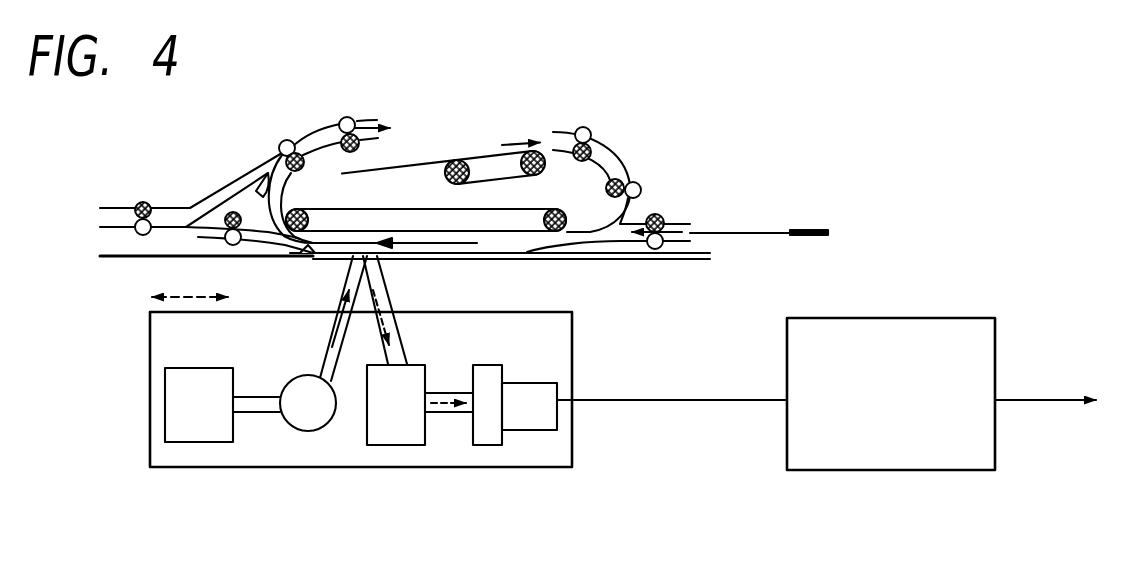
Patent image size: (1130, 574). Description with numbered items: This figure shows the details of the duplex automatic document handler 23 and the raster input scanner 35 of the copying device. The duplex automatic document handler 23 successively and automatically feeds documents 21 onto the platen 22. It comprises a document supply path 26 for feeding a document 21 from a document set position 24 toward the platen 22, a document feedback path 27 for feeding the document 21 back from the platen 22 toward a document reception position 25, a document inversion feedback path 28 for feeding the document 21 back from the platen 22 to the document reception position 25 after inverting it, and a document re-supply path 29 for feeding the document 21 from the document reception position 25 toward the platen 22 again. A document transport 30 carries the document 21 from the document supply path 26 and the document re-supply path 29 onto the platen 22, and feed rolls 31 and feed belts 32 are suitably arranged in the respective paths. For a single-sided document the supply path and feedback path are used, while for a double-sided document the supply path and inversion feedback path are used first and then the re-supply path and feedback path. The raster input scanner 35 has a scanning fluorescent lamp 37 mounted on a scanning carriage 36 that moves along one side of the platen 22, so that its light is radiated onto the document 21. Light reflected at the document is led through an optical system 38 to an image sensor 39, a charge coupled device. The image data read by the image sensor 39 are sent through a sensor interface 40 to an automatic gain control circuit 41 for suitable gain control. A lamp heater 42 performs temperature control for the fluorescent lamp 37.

The document 21 is at (787, 230).
The platen 22 is at (475, 261).
The duplex automatic document handler 23 is at (650, 152).
The document set position 24 is at (755, 241).
The document reception position 25 is at (425, 157).
The document supply path 26 is at (690, 223).
The document feedback path 27 is at (252, 184).
The document inversion feedback path 28 is at (210, 204).
The document re-supply path 29 is at (605, 153).
The document transport 30 is at (379, 207).
The feed rolls 31 is at (488, 152).
The feed belts 32 is at (285, 142).
The raster input scanner 35 is at (392, 473).
The scanning carriage 36 is at (257, 440).
The scanning fluorescent lamp 37 is at (290, 377).
The optical system 38 is at (418, 365).
The image sensor 39 is at (487, 365).
The sensor interface 40 is at (532, 383).
The automatic gain control circuit 41 is at (897, 472).
The lamp heater 42 is at (200, 368).